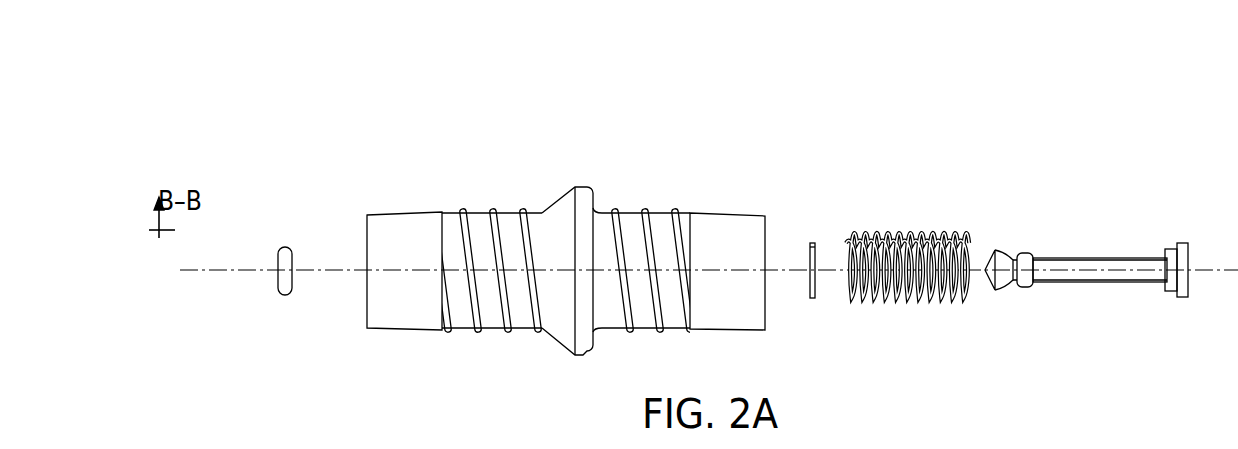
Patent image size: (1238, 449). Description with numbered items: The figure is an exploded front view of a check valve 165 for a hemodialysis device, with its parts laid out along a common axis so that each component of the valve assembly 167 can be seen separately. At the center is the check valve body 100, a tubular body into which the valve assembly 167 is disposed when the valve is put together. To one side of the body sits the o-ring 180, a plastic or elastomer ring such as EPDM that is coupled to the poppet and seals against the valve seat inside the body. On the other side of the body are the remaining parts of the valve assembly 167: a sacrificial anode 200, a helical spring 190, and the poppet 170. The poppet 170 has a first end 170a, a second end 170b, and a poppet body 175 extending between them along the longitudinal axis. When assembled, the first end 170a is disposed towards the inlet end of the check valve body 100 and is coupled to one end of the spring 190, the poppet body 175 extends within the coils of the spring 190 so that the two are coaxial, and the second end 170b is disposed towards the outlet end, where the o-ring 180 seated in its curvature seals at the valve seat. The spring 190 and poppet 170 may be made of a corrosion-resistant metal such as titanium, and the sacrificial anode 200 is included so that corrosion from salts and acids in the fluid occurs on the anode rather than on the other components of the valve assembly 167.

The check valve 165 is at (252, 140).
The o-ring 180 is at (283, 247).
The check valve body 100 is at (385, 360).
The sacrificial anode 200 is at (812, 243).
The valve assembly 167 is at (988, 153).
The spring 190 is at (882, 243).
The poppet 170 is at (1094, 188).
The second end of the poppet 170b is at (997, 250).
The poppet body 175 is at (1092, 282).
The first end of the poppet 170a is at (1178, 243).